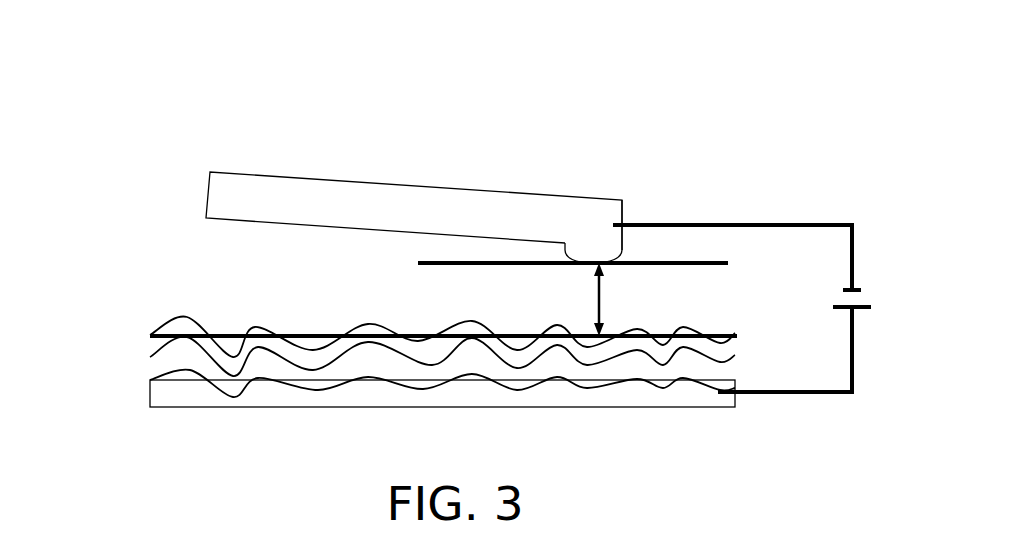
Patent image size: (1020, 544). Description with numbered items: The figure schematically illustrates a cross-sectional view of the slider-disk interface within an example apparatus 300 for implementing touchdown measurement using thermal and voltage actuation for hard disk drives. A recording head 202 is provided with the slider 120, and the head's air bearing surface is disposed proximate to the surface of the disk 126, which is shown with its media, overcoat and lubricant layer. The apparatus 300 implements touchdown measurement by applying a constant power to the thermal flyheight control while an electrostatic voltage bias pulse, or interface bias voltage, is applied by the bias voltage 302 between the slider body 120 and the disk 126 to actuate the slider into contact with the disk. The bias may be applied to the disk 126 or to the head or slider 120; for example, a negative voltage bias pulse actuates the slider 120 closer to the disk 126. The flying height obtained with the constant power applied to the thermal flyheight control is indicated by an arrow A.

The apparatus 300 is at (461, 48).
The slider 120 is at (677, 175).
The recording head 202 is at (656, 91).
The bias voltage 302 is at (816, 293).
The disk 126 is at (565, 410).